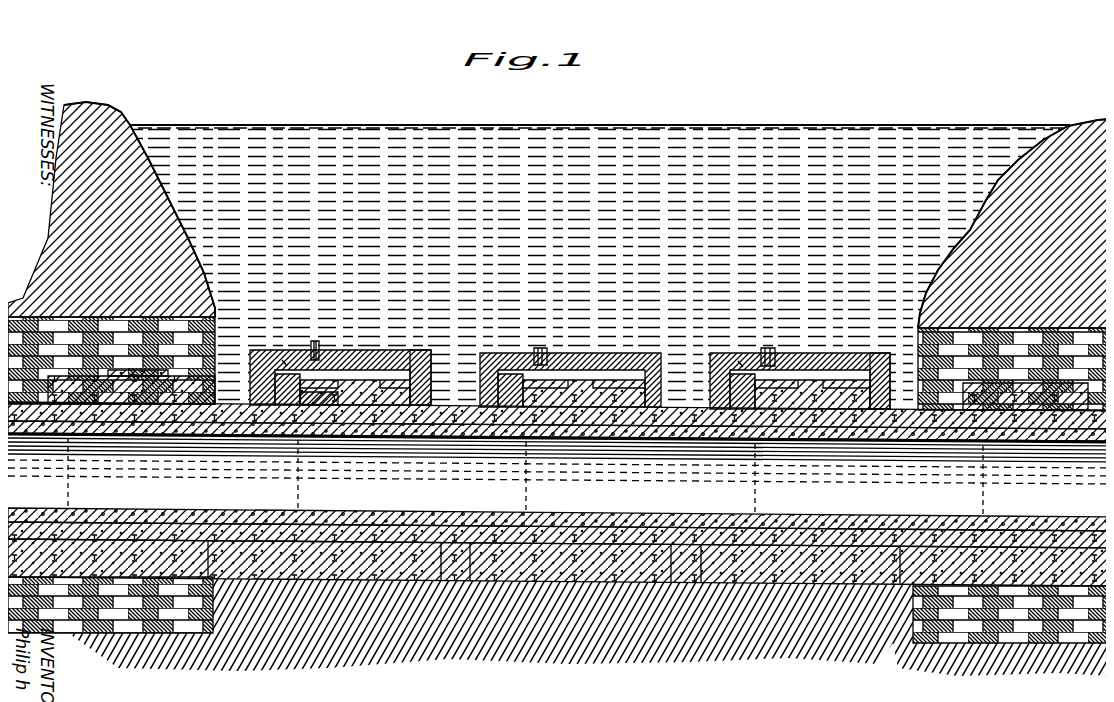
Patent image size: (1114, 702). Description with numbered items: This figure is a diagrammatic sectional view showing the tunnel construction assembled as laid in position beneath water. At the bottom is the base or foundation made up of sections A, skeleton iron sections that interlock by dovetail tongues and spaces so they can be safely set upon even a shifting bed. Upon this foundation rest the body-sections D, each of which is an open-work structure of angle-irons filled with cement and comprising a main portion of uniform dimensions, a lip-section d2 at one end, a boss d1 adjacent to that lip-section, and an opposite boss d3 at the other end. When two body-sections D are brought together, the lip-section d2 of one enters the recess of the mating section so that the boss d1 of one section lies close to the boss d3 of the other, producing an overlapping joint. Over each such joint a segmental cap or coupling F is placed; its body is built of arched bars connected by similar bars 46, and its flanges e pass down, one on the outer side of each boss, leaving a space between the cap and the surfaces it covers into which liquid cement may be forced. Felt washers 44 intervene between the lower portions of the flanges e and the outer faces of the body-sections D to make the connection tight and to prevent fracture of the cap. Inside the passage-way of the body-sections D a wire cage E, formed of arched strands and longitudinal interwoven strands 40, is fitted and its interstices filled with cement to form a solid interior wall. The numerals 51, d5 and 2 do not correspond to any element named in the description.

The connecting bars 46 is at (280, 355).
The post 51 is at (308, 340).
The cap or coupling F is at (370, 343).
The boss d1 is at (405, 362).
The lip-section d2 is at (783, 400).
The opposite boss portion d3 is at (717, 377).
The inner ledge d5 is at (320, 393).
The flanges e is at (240, 368).
The channel 2 is at (450, 392).
The washers 44 is at (252, 397).
The body-sections D is at (557, 477).
The longitudinal interwoven strands 40 is at (468, 507).
The cage E is at (723, 507).
The base or foundation sections A is at (723, 575).